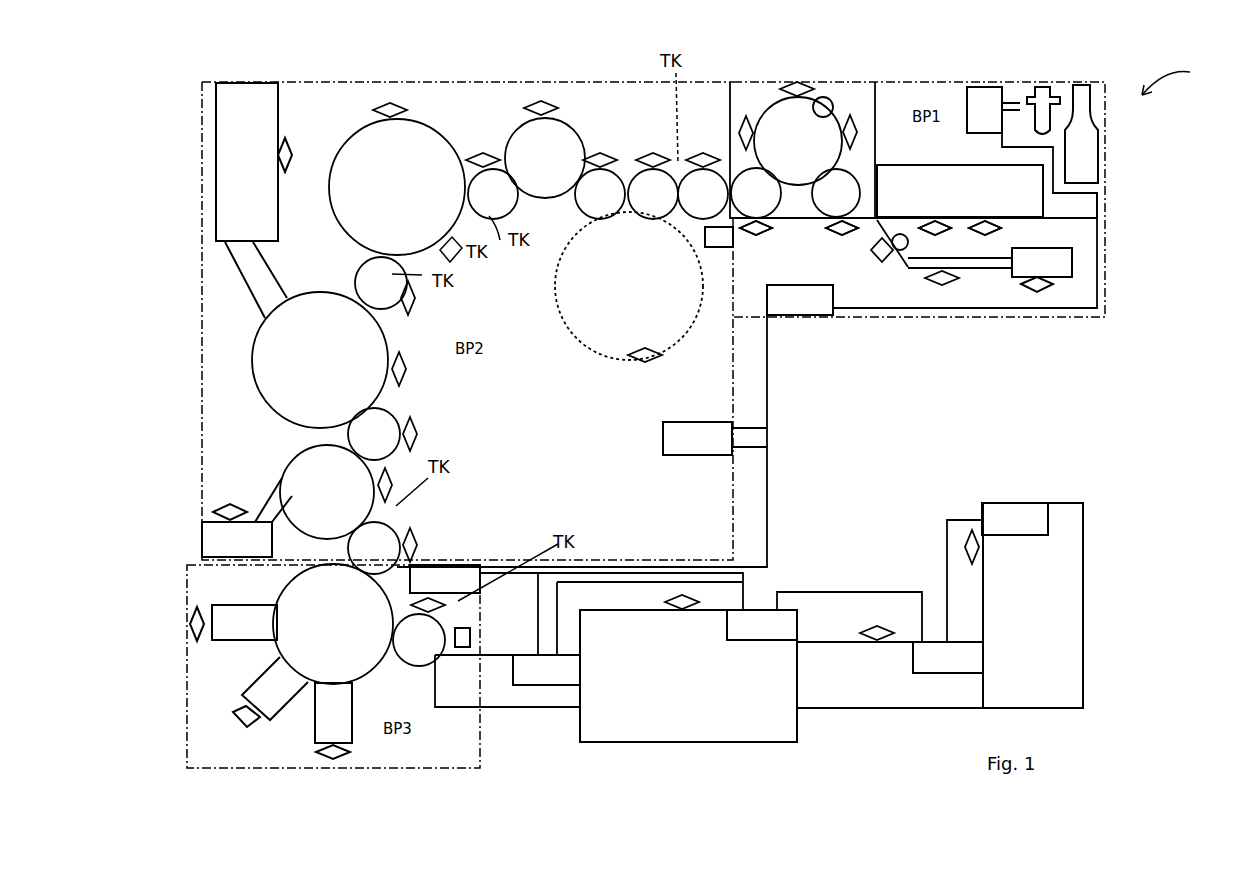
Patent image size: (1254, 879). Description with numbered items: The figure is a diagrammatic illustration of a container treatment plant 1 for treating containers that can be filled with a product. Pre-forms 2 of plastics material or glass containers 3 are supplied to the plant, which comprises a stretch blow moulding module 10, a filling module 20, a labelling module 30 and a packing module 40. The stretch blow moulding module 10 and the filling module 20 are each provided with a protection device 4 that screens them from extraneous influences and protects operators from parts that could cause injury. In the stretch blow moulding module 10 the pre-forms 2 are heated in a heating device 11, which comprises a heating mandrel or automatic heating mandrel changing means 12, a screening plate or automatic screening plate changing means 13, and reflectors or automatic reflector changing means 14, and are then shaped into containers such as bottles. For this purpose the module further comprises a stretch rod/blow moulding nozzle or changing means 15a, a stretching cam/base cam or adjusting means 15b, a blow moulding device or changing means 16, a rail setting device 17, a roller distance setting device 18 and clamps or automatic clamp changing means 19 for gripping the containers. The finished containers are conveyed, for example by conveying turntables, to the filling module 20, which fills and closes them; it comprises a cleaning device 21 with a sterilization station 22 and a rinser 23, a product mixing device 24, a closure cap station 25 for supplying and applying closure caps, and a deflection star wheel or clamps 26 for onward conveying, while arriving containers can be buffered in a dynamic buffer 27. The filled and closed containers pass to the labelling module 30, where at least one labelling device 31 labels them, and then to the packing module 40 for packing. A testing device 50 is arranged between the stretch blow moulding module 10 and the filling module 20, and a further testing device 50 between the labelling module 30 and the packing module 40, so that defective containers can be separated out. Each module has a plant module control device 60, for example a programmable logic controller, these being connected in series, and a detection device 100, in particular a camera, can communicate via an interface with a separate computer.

The container treatment plant 1 is at (1175, 78).
The pre-forms 2 is at (1052, 85).
The glass containers 3 is at (1098, 162).
The protection device 4 is at (735, 505).
The stretch blow moulding module 10 is at (1105, 278).
The heating device 11 is at (1043, 207).
The heating mandrel or automatic heating mandrel changing means 12 is at (1000, 232).
The screening plate or automatic screening plate changing means 13 is at (1158, 232).
The reflectors or automatic reflector changing means 14 is at (1158, 232).
The stretch rod/blow moulding nozzle or automatic changing means 15a is at (803, 86).
The stretching cam/base cam or automatic adjusting or changing means 15b is at (748, 116).
The blow moulding device or automatic blow moulding device changing means 16 is at (875, 82).
The rail setting device 17 is at (925, 285).
The roller distance setting device 18 is at (1045, 292).
The clamps or automatic clamp changing means 19 is at (770, 232).
The filling module 20 is at (202, 346).
The cleaning device 21 is at (481, 72).
The sterilization station 22 is at (395, 102).
The rinser 23 is at (540, 100).
The product mixing device 24 is at (215, 178).
The closure cap station 25 is at (202, 530).
The deflection star wheel or clamps 26 is at (411, 527).
The dynamic buffer 27 is at (588, 343).
The labelling module 30 is at (450, 768).
The labelling device 31 is at (188, 634).
The packing module 40 is at (705, 772).
The testing device 50 is at (733, 247).
The plant module control device 60 is at (448, 564).
The detection device 100 is at (983, 82).